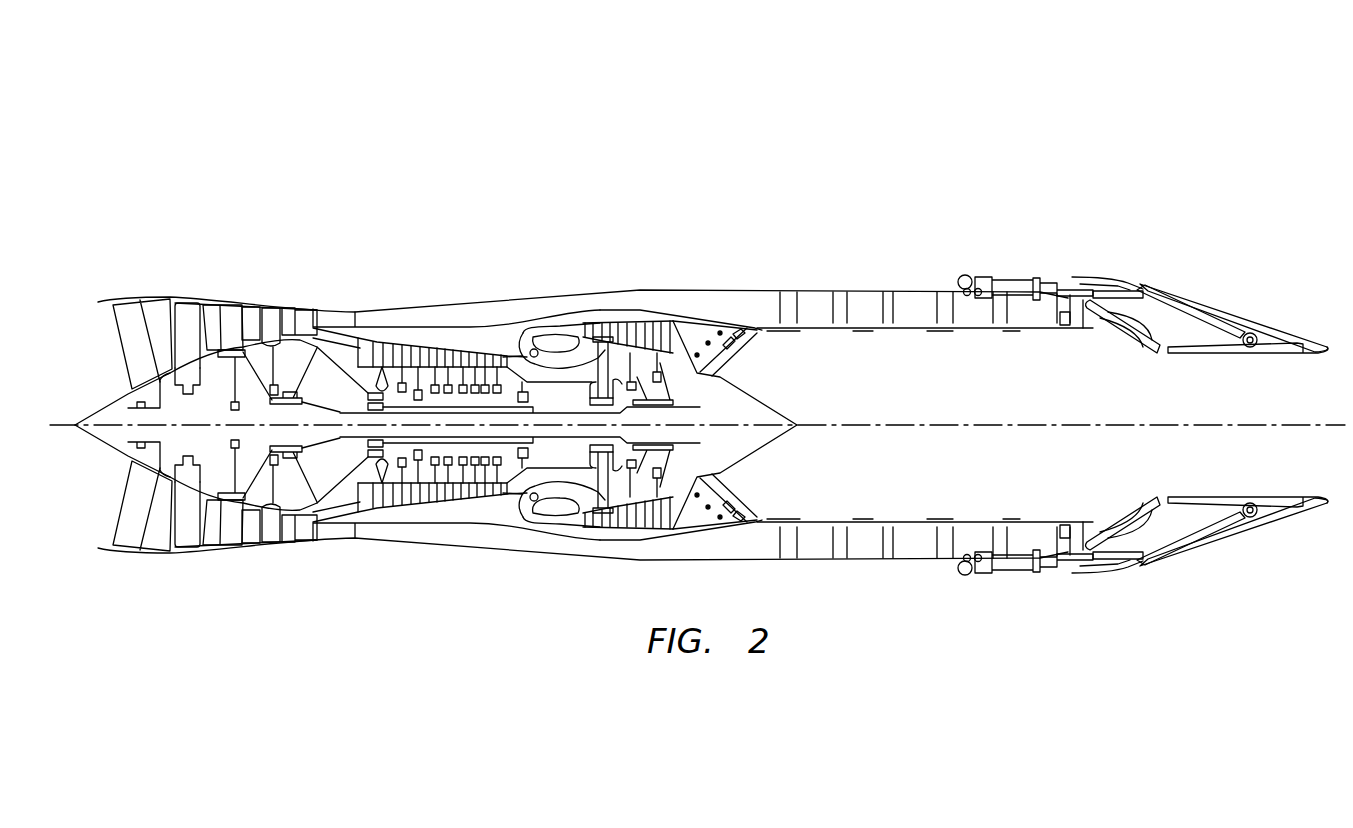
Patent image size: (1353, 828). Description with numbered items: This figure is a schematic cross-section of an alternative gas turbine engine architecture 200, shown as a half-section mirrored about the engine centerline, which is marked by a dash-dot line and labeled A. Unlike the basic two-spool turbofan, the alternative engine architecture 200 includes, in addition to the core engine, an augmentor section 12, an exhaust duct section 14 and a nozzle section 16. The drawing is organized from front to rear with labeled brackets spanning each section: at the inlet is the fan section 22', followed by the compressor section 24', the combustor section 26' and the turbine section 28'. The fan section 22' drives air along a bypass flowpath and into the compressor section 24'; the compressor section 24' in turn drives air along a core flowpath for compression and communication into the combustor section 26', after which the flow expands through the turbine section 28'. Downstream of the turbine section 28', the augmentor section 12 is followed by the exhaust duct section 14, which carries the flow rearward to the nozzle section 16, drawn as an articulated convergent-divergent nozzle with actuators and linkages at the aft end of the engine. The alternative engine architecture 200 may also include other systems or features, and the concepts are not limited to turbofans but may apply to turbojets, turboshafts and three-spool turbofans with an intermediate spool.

The alternative engine architecture 200 is at (960, 119).
The fan section 22' is at (207, 364).
The compressor section 24' is at (506, 359).
The combustor section 26' is at (554, 352).
The turbine section 28' is at (629, 353).
The augmentor section 12 is at (676, 230).
The exhaust duct section 14 is at (1060, 230).
The nozzle section 16 is at (1060, 230).
The engine central longitudinal axis A is at (1240, 424).